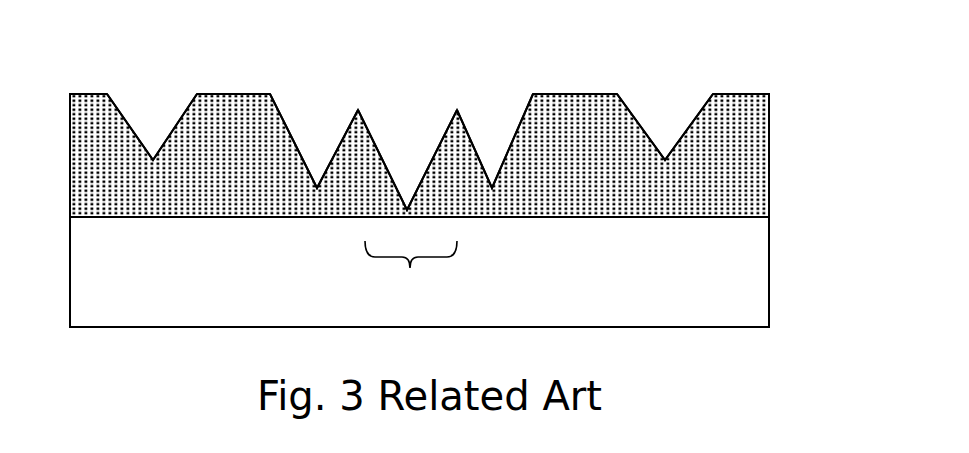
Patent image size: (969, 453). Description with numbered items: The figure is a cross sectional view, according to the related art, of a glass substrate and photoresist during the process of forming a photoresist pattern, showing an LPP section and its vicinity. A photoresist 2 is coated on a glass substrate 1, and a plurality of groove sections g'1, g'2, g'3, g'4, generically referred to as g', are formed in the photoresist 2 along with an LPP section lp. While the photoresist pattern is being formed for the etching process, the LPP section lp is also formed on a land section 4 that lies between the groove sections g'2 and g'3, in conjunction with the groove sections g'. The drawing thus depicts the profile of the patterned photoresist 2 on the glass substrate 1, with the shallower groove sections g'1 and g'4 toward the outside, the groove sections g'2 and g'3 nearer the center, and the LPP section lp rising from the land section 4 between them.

The glass substrate 1 is at (770, 283).
The photoresist 2 is at (769, 165).
The land section 4 is at (411, 272).
The groove section g'1 is at (158, 99).
The groove section g'2 is at (323, 113).
The groove section g'3 is at (507, 113).
The groove section g'4 is at (687, 99).
The LPP section lp is at (407, 140).